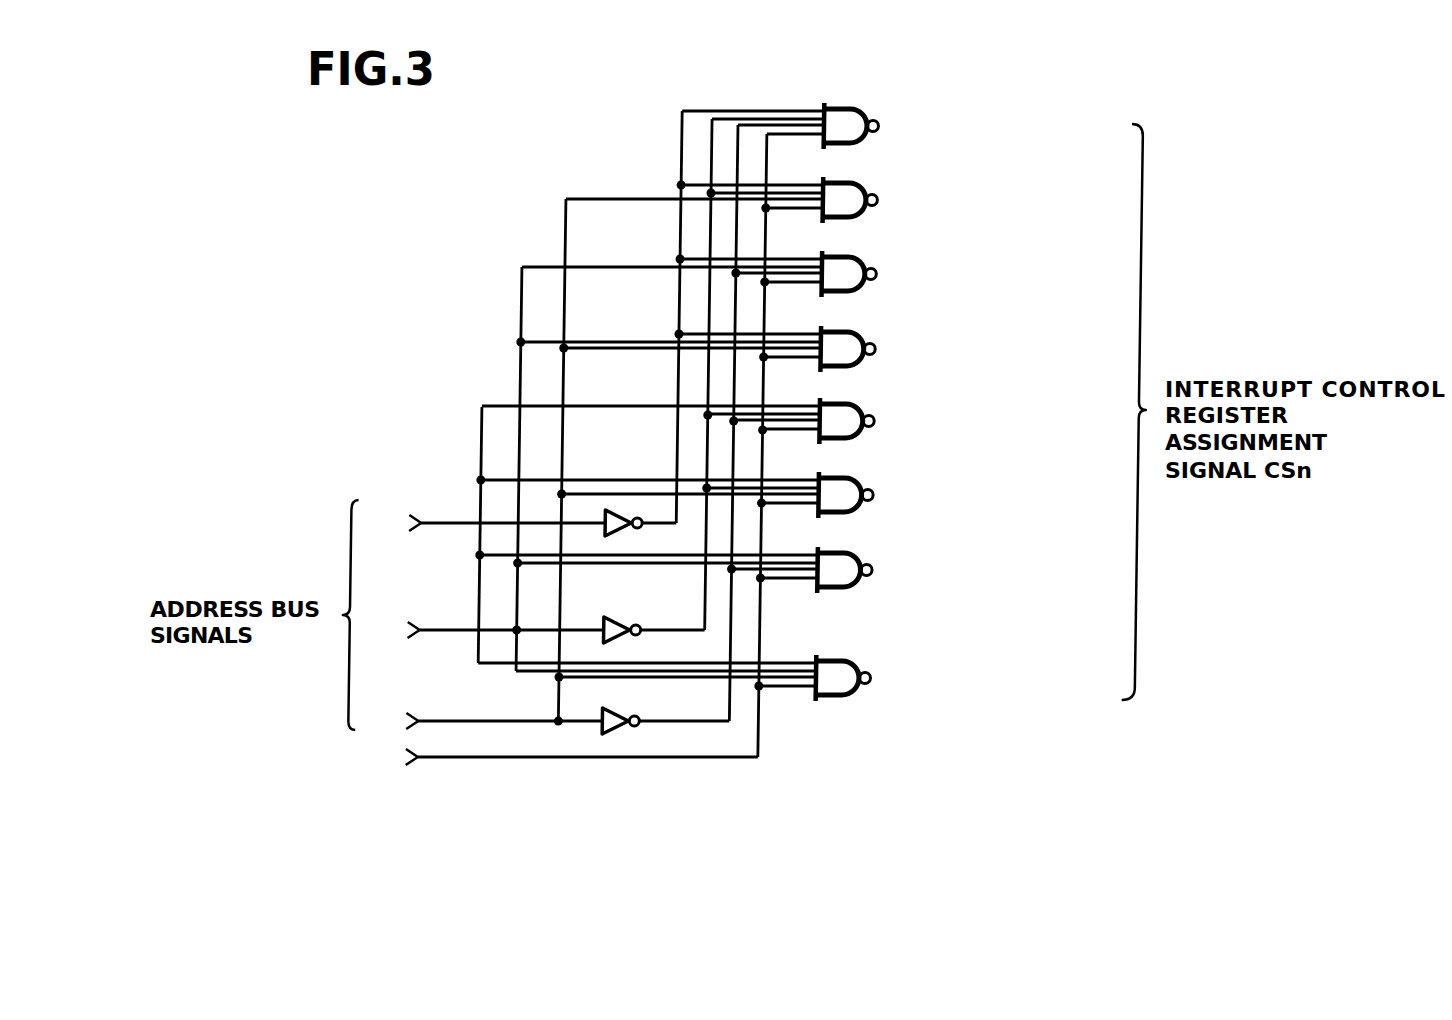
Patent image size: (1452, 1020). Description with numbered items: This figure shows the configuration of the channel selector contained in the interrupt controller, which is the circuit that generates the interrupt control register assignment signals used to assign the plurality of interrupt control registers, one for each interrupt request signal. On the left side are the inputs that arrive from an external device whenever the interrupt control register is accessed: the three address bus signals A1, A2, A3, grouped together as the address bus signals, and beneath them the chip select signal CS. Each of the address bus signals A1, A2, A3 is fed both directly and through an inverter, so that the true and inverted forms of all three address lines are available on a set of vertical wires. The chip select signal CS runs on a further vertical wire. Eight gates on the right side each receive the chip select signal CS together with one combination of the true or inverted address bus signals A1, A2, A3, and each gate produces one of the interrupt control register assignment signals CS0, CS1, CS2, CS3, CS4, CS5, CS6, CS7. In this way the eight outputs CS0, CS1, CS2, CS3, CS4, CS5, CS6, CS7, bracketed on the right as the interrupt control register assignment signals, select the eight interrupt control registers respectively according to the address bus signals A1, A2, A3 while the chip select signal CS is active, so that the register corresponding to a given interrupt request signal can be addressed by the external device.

The interrupt control register assignment signal CS0 is at (879, 126).
The interrupt control register assignment signal CS1 is at (878, 200).
The interrupt control register assignment signal CS2 is at (877, 274).
The interrupt control register assignment signal CS3 is at (876, 349).
The interrupt control register assignment signal CS4 is at (875, 421).
The interrupt control register assignment signal CS5 is at (874, 495).
The interrupt control register assignment signal CS6 is at (873, 570).
The interrupt control register assignment signal CS7 is at (871, 678).
The address bus signal A1 is at (525, 523).
The address bus signal A2 is at (540, 630).
The address bus signal A3 is at (552, 721).
The chip select signal CS is at (406, 757).